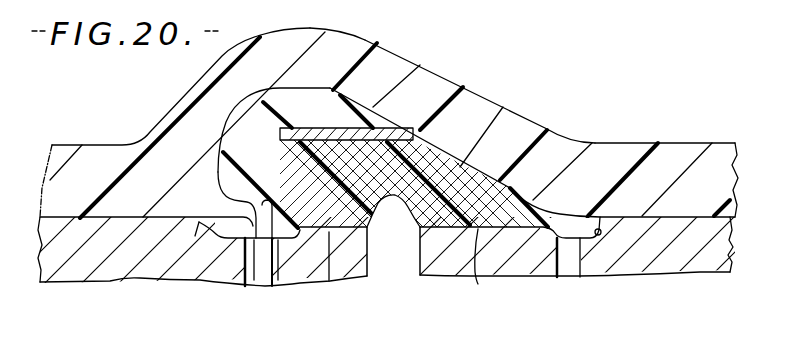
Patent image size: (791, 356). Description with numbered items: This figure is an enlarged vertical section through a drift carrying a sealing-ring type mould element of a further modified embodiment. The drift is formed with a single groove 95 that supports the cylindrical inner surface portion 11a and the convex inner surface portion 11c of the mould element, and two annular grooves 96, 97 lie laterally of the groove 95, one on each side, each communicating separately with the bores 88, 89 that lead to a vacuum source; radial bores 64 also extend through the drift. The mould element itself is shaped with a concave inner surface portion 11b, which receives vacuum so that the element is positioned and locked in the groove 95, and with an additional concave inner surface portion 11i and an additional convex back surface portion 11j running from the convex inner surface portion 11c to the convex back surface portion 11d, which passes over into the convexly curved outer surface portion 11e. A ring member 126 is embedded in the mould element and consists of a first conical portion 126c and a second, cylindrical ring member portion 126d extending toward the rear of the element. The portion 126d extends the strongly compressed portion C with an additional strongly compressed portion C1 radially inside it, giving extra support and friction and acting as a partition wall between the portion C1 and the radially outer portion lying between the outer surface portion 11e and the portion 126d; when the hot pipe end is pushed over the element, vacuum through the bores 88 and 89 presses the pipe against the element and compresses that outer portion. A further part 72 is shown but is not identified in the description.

The inner surface portion 11a is at (477, 280).
The concave inner surface portion 11b is at (397, 200).
The convex inner surface portion 11c is at (330, 284).
The convex back surface portion 11d is at (216, 176).
The convex outer surface portion 11e is at (303, 88).
The additional concave inner surface portion 11i is at (256, 250).
The additional convex back surface portion 11j is at (216, 230).
The radial bores 64 is at (403, 270).
The cover member 72 is at (109, 217).
The bore 88 is at (262, 286).
The bore 89 is at (568, 272).
The groove 95 is at (262, 195).
The annular groove 96 is at (599, 240).
The annular groove 97 is at (278, 250).
The ring member 126 is at (436, 150).
The first conical portion 126c is at (500, 173).
The second ring member portion 126d is at (322, 133).
The strongly compressed portion C is at (453, 200).
The additional strongly compressed portion C1 is at (360, 132).